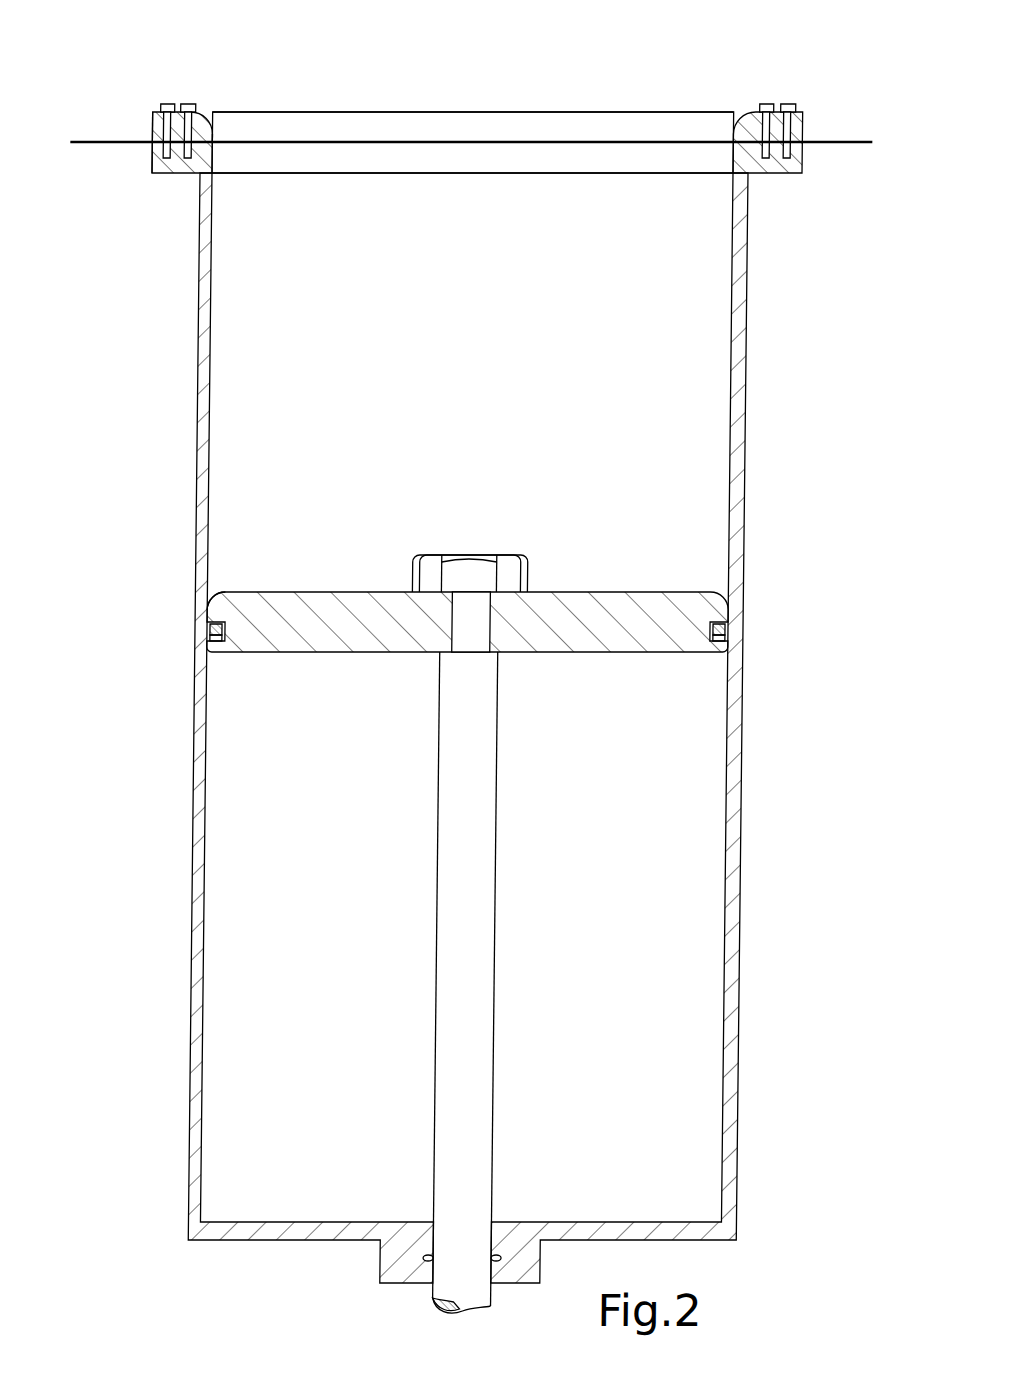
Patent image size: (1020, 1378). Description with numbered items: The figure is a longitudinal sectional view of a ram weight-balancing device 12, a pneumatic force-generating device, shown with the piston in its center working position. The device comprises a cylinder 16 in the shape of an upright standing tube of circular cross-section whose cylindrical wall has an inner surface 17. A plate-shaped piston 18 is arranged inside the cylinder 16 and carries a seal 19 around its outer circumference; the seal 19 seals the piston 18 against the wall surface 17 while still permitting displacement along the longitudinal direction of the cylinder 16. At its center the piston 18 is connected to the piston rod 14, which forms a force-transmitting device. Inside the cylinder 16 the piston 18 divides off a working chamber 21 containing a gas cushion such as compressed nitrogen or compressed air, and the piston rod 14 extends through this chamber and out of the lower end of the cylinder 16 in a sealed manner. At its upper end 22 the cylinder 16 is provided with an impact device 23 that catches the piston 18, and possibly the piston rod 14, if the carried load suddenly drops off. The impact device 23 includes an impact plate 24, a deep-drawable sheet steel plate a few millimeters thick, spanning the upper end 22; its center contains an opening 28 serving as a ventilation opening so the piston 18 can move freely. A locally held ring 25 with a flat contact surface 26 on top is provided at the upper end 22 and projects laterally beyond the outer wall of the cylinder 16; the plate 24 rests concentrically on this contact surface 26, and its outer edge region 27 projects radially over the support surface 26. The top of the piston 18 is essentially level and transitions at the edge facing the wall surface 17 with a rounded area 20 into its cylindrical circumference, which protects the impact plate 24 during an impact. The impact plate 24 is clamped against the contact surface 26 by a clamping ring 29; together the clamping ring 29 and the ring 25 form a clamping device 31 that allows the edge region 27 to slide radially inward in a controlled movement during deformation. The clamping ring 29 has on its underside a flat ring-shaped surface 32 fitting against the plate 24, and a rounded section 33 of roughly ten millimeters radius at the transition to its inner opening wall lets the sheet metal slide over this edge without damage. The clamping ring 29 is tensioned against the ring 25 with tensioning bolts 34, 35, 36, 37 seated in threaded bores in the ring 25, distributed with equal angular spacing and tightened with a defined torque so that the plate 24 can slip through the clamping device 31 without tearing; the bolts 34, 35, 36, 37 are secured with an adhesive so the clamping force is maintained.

The weight-balancing device 12 is at (797, 57).
The piston rod 14 is at (480, 860).
The cylinder 16 is at (749, 533).
The inner surface 17 is at (725, 422).
The piston 18 is at (565, 634).
The seal 19 is at (710, 636).
The rounded area 20 is at (220, 590).
The working chamber 21 is at (364, 930).
The upper end 22 is at (770, 190).
The impact device 23 is at (670, 105).
The impact plate 24 is at (322, 140).
The ring 25 is at (168, 163).
The contact surface 26 is at (152, 160).
The outer edge region 27 is at (80, 140).
The opening 28 is at (430, 137).
The clamping ring 29 is at (152, 115).
The clamping device 31 is at (815, 133).
The ring-shaped surface 32 is at (152, 126).
The rounded section 33 is at (212, 135).
The tensioning bolt 34 is at (170, 108).
The tensioning bolt 35 is at (190, 108).
The tensioning bolt 36 is at (765, 105).
The tensioning bolt 37 is at (790, 105).